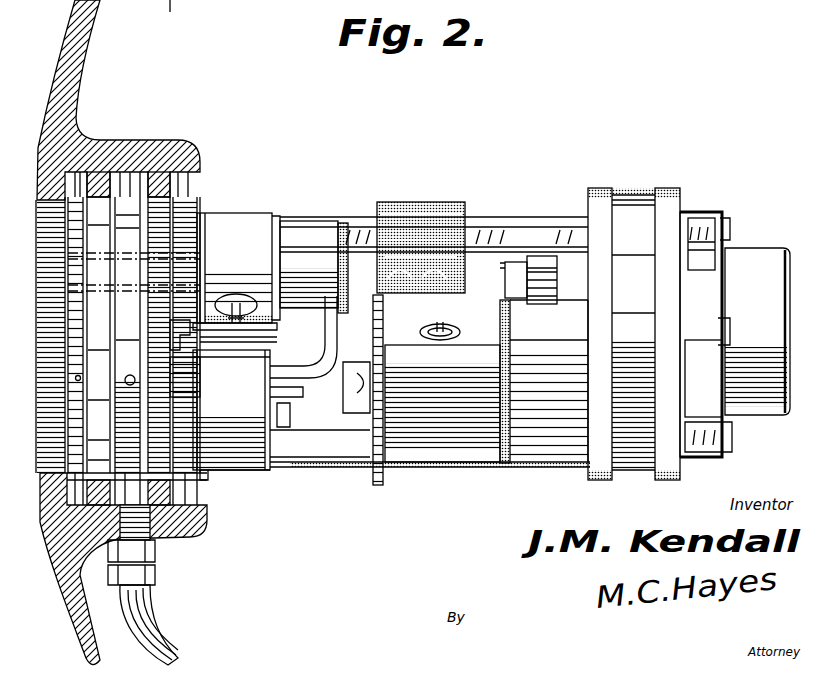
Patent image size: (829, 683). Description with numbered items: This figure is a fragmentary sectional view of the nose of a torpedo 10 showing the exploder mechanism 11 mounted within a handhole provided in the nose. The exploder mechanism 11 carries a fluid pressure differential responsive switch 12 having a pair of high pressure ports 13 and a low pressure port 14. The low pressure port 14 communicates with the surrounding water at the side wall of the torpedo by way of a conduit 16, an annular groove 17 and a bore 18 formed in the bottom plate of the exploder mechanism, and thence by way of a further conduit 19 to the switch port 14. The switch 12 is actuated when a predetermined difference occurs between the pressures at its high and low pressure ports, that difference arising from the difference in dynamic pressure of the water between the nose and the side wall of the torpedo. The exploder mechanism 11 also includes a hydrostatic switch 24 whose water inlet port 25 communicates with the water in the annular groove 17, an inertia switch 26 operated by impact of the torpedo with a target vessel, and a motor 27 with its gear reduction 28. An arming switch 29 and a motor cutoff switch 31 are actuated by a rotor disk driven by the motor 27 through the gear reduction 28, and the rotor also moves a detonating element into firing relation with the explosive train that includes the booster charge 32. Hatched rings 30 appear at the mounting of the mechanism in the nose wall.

The torpedo 10 is at (85, 58).
The exploder mechanism 11 is at (478, 184).
The fluid pressure differential responsive switch 12 is at (245, 212).
The high pressure ports 13 is at (95, 253).
The low pressure port 14 is at (343, 310).
The conduit 16 is at (150, 626).
The annular groove 17 is at (160, 525).
The bore 18 is at (130, 375).
The conduit 19 is at (330, 378).
The hydrostatic switch 24 is at (248, 472).
The water inlet port 25 is at (206, 471).
The inertia switch 26 is at (223, 395).
The motor 27 is at (440, 349).
The gear reduction 28 is at (486, 381).
The arming switch 29 is at (614, 193).
The packing rings 30 is at (160, 172).
The motor cutoff switch 31 is at (505, 283).
The booster charge 32 is at (757, 248).